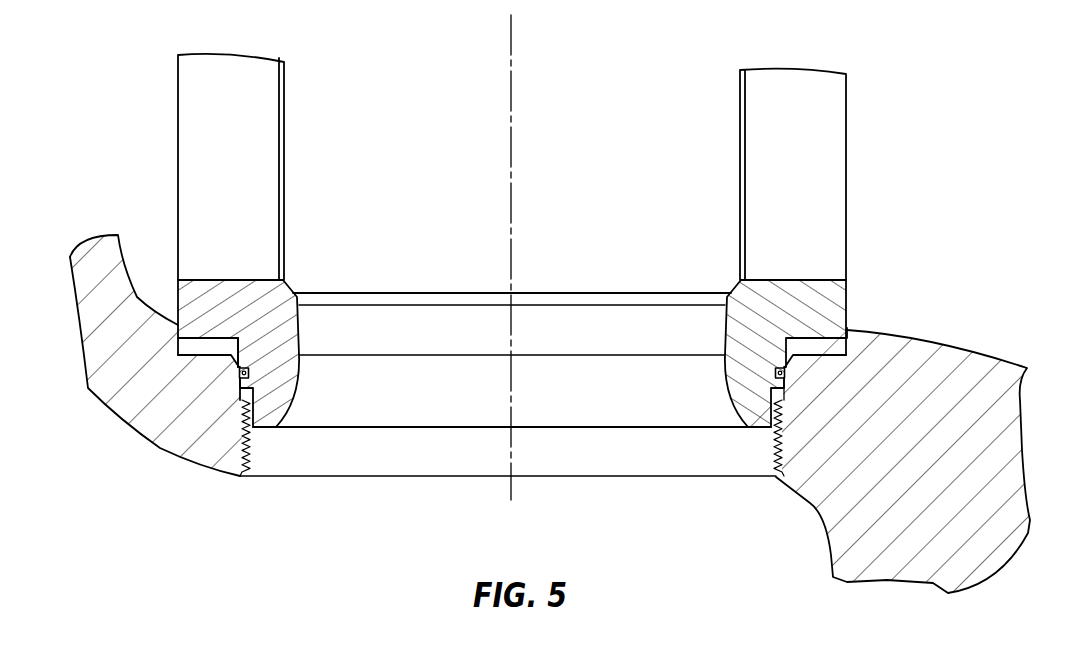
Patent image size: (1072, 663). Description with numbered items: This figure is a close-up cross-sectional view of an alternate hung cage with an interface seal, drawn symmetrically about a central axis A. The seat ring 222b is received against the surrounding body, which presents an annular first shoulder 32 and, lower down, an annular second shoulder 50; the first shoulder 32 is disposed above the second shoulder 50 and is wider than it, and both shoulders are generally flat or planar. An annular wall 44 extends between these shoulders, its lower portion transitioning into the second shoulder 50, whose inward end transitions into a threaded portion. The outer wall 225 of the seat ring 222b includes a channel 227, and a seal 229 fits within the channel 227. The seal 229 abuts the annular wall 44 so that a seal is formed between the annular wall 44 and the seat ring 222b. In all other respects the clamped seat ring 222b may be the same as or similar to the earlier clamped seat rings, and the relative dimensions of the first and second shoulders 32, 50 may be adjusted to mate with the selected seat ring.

The central axis A is at (511, 161).
The first shoulder 32 is at (195, 375).
The annular wall 44 is at (237, 375).
The second shoulder 50 is at (242, 400).
The seat ring 222b is at (268, 403).
The outer wall 225 is at (245, 362).
The channel 227 is at (248, 375).
The seal 229 is at (243, 365).